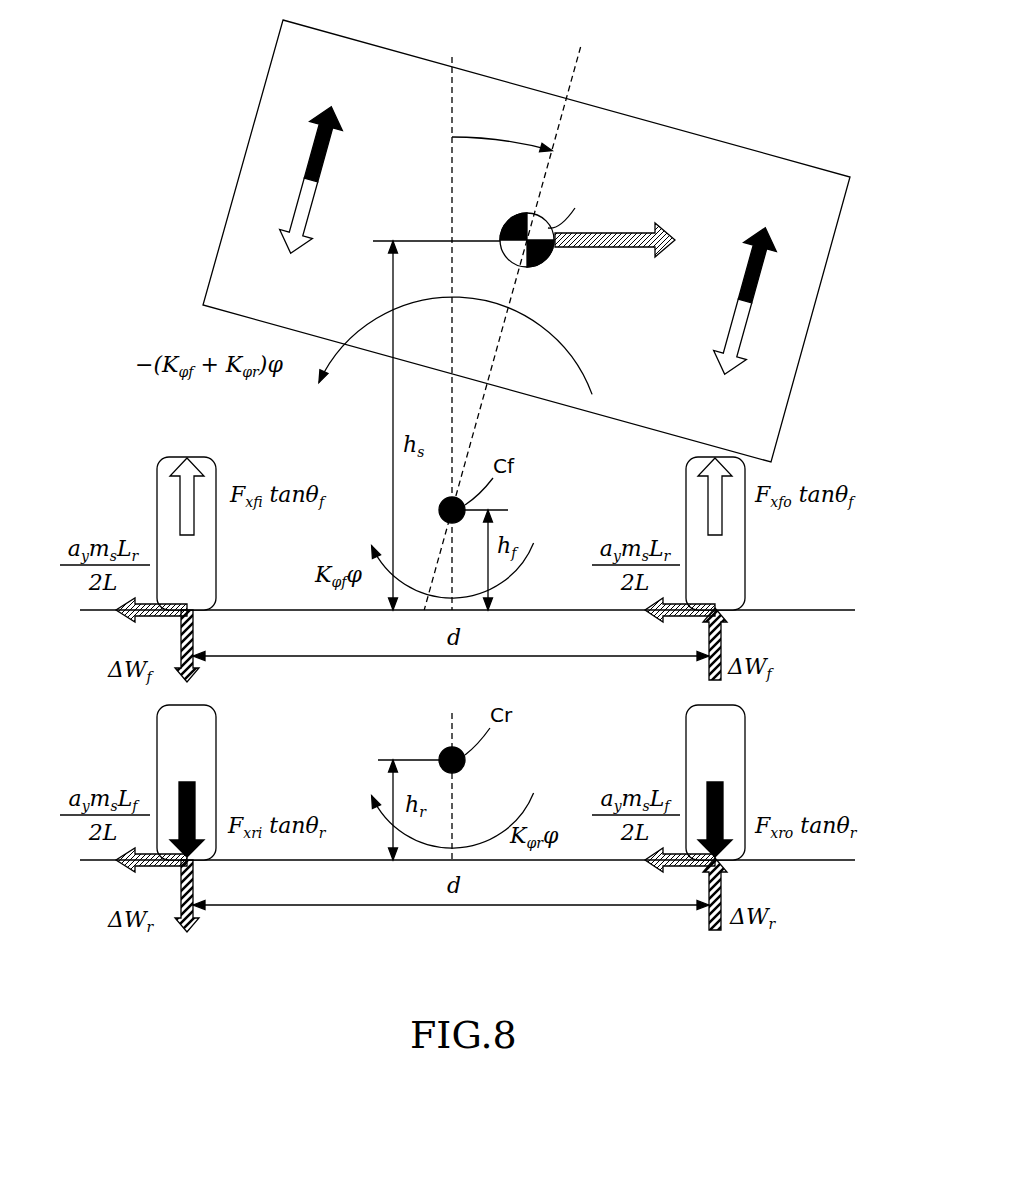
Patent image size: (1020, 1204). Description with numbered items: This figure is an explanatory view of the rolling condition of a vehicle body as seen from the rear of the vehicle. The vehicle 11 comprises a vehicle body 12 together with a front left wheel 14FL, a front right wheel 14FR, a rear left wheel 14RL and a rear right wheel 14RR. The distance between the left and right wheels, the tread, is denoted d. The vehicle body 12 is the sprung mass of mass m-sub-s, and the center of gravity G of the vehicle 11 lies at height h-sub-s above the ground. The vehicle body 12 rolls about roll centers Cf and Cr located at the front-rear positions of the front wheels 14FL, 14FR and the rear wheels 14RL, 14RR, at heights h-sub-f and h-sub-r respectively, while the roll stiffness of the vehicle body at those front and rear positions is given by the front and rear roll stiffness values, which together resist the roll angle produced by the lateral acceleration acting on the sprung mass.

The vehicle 11 is at (658, 120).
The vehicle body 12 is at (243, 163).
The front left wheel 14FL is at (157, 488).
The front right wheel 14FR is at (745, 553).
The rear left wheel 14RL is at (157, 735).
The rear right wheel 14RR is at (745, 750).